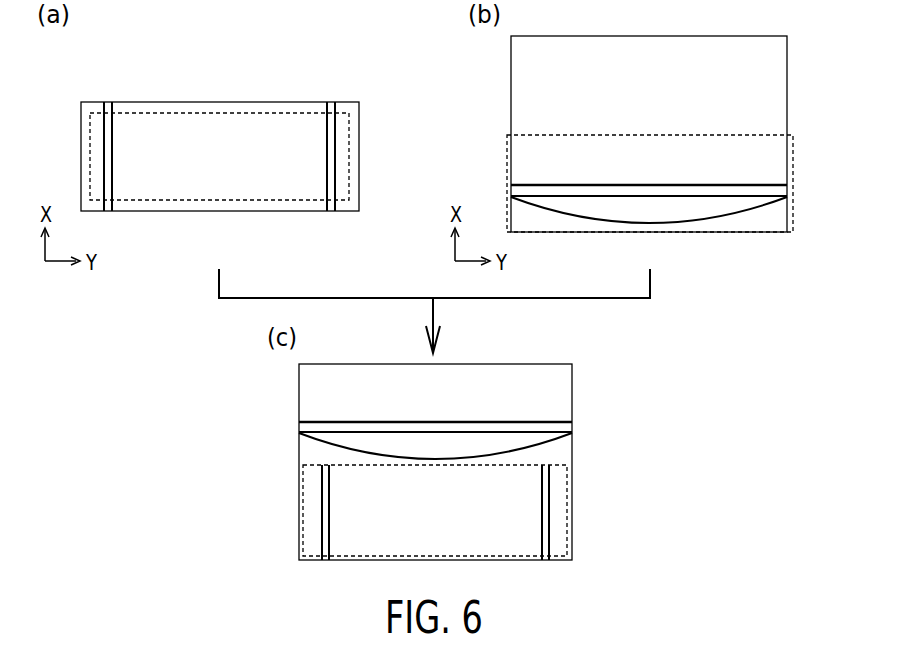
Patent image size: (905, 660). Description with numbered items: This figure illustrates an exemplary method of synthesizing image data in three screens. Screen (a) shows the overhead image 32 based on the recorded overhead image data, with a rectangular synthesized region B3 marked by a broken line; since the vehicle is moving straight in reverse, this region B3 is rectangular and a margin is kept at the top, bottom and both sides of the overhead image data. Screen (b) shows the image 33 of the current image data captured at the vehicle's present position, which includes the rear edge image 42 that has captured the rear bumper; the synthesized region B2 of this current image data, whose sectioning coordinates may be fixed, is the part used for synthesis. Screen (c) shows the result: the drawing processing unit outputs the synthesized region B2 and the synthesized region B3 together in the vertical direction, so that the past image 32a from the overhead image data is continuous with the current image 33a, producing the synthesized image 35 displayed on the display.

The overhead image 32 is at (157, 108).
The past image 32a is at (336, 157).
The synthesized region B3 is at (263, 112).
The image 33 is at (565, 50).
The current image 33a is at (520, 153).
The synthesized region B2 is at (690, 134).
The rear edge image 42 is at (565, 228).
The synthesized image 35 is at (280, 397).